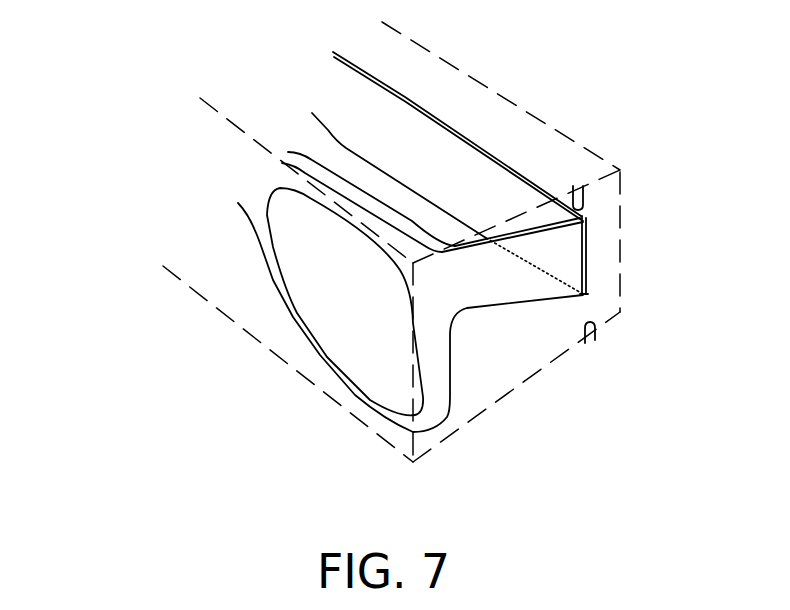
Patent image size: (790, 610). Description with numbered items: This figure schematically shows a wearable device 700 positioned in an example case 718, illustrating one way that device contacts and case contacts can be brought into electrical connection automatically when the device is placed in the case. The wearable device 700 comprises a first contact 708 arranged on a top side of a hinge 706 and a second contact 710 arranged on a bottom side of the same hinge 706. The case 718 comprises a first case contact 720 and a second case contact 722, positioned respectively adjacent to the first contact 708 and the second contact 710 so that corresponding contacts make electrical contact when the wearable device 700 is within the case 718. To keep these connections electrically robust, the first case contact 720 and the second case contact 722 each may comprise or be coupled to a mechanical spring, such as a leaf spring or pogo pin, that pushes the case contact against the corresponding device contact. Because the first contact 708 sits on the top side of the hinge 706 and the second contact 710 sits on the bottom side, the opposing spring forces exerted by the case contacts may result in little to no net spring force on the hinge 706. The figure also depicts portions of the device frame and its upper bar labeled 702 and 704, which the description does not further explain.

The wearable device 700 is at (87, 157).
The lens frame rim 702 is at (260, 242).
The top frame bar 704 is at (405, 97).
The hinge 706 is at (566, 265).
The first contact 708 is at (585, 218).
The second contact 710 is at (598, 304).
The case 718 is at (316, 385).
The first case contact 720 is at (578, 180).
The second case contact 722 is at (593, 350).